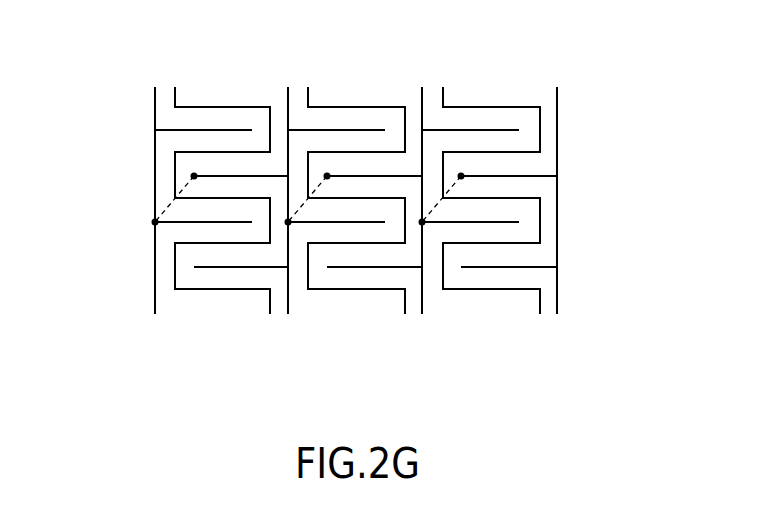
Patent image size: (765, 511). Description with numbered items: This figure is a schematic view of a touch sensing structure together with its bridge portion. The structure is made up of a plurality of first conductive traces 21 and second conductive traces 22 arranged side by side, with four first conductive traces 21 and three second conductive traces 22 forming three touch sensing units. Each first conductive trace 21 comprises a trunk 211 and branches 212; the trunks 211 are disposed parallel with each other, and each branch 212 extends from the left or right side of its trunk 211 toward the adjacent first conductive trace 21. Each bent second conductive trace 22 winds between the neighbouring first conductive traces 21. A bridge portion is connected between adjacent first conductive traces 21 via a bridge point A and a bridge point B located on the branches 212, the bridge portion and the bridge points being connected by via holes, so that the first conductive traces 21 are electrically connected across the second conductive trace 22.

The first conductive trace 21 is at (155, 93).
The second conductive trace 22 is at (197, 107).
The trunk 211 is at (155, 175).
The branch 212 is at (220, 222).